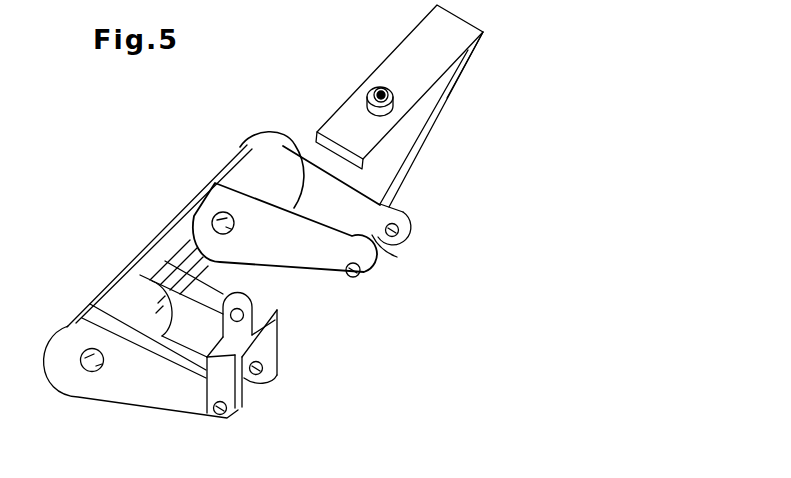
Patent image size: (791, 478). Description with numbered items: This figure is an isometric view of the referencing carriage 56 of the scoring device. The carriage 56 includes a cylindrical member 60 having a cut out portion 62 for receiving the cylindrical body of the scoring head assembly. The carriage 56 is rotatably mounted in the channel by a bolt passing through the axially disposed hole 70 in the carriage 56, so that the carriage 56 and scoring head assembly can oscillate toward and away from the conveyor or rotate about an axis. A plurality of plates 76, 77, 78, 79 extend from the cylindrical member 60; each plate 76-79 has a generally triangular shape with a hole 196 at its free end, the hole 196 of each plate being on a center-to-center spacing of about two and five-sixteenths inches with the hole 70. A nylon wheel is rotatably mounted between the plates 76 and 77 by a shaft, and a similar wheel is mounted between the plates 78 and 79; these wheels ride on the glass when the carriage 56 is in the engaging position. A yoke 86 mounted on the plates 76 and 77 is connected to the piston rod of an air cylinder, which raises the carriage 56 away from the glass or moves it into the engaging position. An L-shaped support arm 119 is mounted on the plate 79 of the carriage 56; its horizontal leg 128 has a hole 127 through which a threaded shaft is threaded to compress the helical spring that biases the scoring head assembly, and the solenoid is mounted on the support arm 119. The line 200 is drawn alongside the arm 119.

The carriage 56 is at (247, 104).
The cylindrical member 60 is at (87, 278).
The cut out portion 62 is at (168, 248).
The hole 70 is at (217, 216).
The plate 76 is at (167, 409).
The plate 77 is at (248, 380).
The plate 78 is at (330, 277).
The plate 79 is at (396, 252).
The yoke 86 is at (276, 302).
The support arm 119 is at (444, 131).
The hole 127 is at (377, 88).
The leg 128 is at (448, 68).
The hole 196 is at (398, 226).
The rod 200 is at (448, 97).